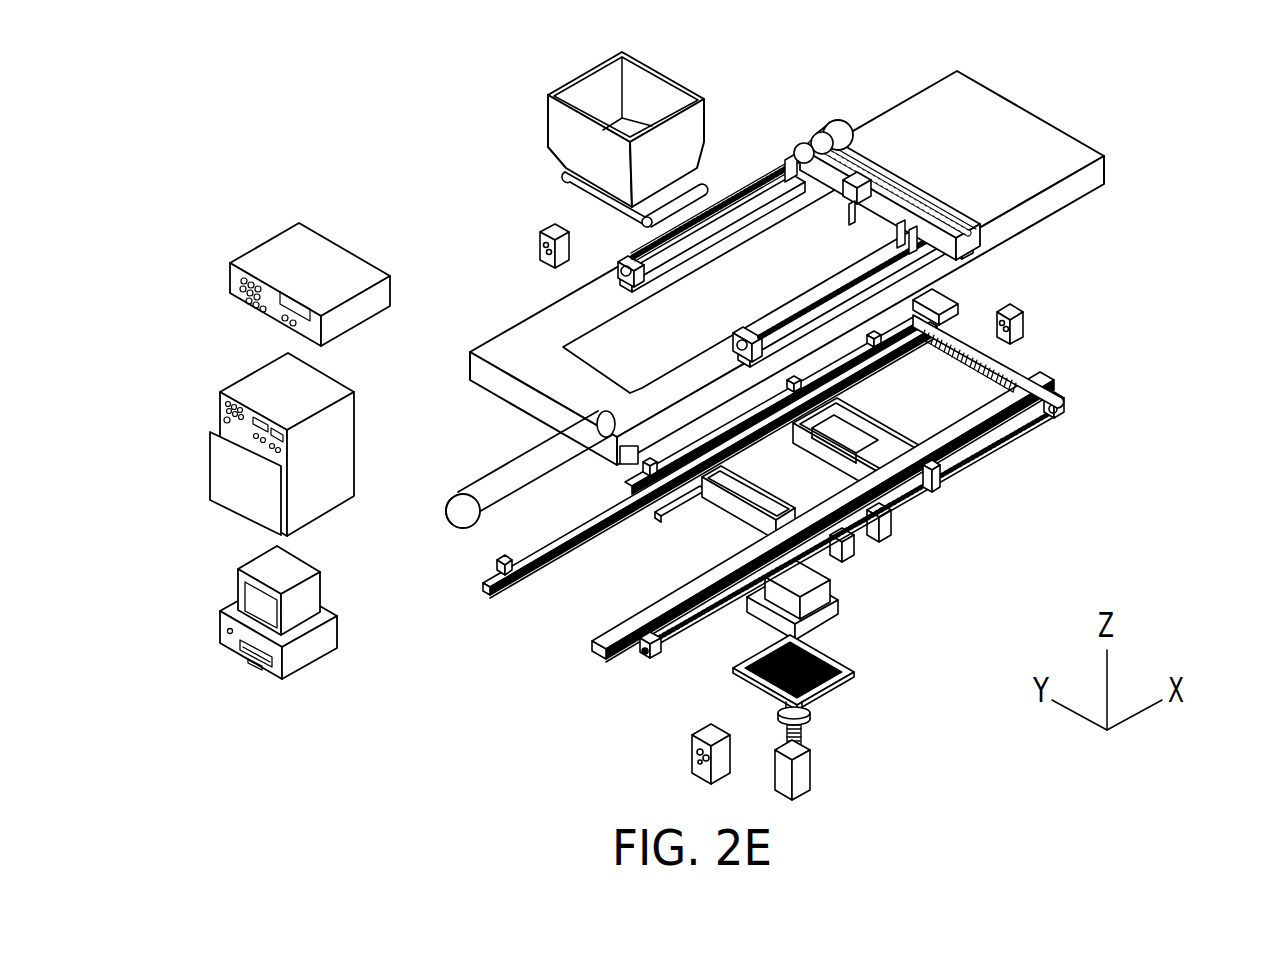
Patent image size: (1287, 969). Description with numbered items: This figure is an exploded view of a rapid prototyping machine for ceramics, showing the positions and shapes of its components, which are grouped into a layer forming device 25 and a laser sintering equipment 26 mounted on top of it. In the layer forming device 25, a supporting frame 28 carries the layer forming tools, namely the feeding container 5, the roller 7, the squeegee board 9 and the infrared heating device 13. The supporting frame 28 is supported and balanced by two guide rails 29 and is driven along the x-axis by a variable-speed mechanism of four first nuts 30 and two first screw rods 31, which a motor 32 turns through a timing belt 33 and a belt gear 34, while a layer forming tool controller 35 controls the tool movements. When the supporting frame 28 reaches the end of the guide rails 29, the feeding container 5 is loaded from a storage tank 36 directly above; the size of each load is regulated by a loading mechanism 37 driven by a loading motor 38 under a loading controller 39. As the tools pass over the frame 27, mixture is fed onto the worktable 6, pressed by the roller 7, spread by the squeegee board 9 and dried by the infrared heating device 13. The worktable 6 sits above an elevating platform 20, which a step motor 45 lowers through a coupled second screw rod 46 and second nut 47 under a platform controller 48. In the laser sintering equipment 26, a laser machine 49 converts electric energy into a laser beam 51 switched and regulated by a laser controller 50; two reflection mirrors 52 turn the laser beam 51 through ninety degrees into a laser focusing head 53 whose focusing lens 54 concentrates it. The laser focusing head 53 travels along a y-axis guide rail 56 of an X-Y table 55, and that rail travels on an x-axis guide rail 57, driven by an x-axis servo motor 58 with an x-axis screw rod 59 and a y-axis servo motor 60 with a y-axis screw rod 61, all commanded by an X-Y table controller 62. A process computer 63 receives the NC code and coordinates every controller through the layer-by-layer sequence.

The feeding container 5 is at (708, 493).
The worktable 6 is at (833, 650).
The roller 7 is at (862, 545).
The squeegee board 9 is at (892, 525).
The infrared heating device 13 is at (872, 440).
The elevating platform 20 is at (856, 668).
The layer forming device 25 is at (1242, 414).
The laser sintering equipment 26 is at (1244, 97).
The frame 27 is at (840, 577).
The supporting frame 28 is at (683, 503).
The guide rails 29 is at (608, 645).
The first nuts 30 is at (942, 481).
The first screw rods 31 is at (641, 658).
The motor 32 is at (950, 293).
The timing belt 33 is at (1010, 361).
The belt gear 34 is at (1056, 414).
The layer forming tool controller 35 is at (1025, 312).
The storage tank 36 is at (548, 120).
The loading mechanism 37 is at (563, 175).
The loading motor 38 is at (647, 222).
The loading controller 39 is at (540, 245).
The step motor 45 is at (812, 770).
The second screw rod 46 is at (808, 746).
The second nut 47 is at (812, 712).
The platform controller 48 is at (690, 762).
The laser machine 49 is at (495, 490).
The laser controller 50 is at (345, 437).
The laser beam 51 is at (608, 423).
The reflection mirrors 52 is at (935, 240).
The laser focusing head 53 is at (848, 205).
The focusing lens 54 is at (854, 204).
The X-Y table 55 is at (882, 137).
The y-axis guide rail 56 is at (878, 184).
The x-axis guide rail 57 is at (628, 278).
The x-axis servo motor 58 is at (836, 120).
The x-axis screw rod 59 is at (740, 188).
The y-axis servo motor 60 is at (802, 144).
The y-axis screw rod 61 is at (820, 133).
The X-Y table controller 62 is at (345, 262).
The process computer 63 is at (332, 635).